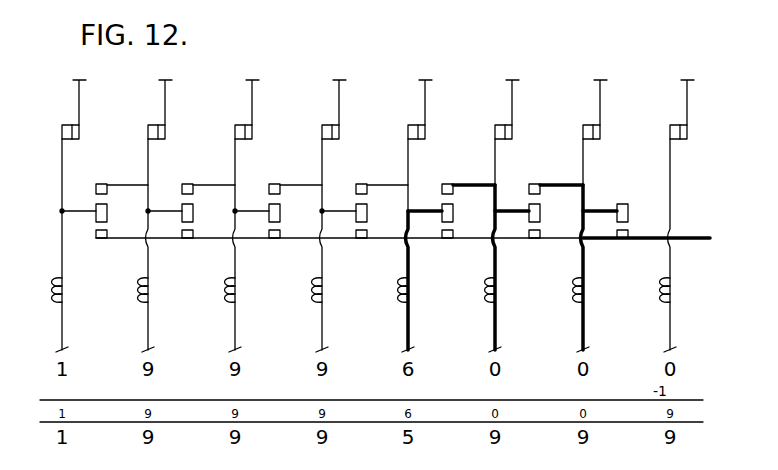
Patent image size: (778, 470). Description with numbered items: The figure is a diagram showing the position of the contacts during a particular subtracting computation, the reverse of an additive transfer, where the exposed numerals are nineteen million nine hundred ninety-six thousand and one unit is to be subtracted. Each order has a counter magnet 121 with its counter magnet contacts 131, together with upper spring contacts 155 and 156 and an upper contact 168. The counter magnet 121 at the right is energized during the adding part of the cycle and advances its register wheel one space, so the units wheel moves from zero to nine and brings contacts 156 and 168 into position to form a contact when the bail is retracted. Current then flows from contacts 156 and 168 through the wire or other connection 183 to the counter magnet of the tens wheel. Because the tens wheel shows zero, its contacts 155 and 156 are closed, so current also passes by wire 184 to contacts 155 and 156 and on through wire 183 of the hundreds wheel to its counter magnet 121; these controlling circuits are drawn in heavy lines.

The counter magnet contacts 131 is at (160, 132).
The wire 184 is at (117, 186).
The spring contact 156 is at (98, 206).
The spring contact 155 is at (186, 206).
The upper contact 168 is at (101, 239).
The counter magnet 121 is at (140, 298).
The wire or other connection 183 is at (406, 260).